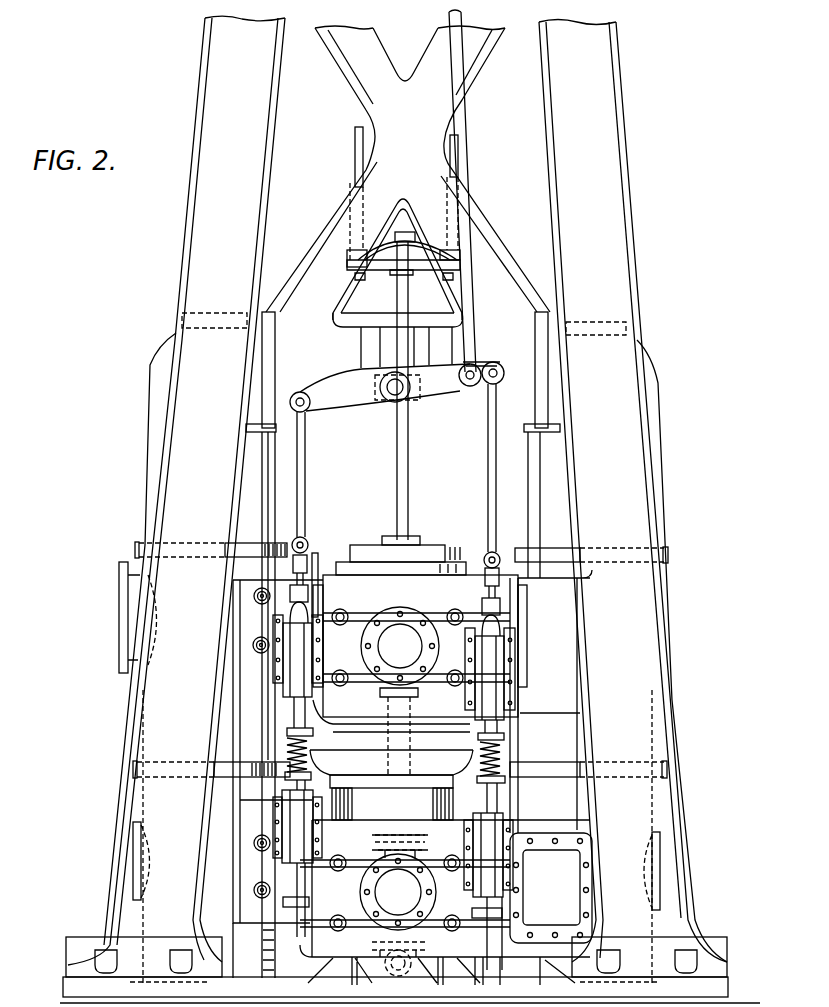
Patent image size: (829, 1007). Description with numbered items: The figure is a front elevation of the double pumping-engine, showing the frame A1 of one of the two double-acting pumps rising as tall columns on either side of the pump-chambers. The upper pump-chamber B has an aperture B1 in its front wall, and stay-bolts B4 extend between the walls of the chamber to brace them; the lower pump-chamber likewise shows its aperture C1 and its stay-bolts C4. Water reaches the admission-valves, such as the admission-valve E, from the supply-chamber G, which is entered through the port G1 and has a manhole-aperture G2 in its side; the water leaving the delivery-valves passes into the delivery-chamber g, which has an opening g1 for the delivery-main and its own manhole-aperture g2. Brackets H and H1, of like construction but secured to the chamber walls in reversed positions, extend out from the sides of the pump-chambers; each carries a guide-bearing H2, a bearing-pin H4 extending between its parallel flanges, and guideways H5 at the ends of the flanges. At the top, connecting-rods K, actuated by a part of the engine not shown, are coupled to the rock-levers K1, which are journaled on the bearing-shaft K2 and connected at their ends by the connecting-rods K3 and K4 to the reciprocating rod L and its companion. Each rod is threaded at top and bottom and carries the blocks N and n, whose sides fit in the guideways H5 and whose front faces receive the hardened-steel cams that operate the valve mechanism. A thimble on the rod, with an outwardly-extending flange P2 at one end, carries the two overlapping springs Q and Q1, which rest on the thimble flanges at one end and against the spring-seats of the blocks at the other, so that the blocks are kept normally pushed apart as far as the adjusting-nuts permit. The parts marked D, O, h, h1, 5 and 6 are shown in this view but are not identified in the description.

The pump frame A1 is at (170, 660).
The connecting-rod K is at (472, 160).
The rock-lever K1 is at (452, 396).
The bearing-shaft K2 is at (388, 405).
The connecting-rod K3 is at (497, 458).
The connecting-rod K4 is at (304, 470).
The valve spindle D is at (409, 450).
The delivery-chamber g is at (252, 752).
The delivery opening g1 is at (119, 588).
The manhole-aperture g2 is at (133, 872).
The supply-chamber G is at (412, 777).
The supply port G1 is at (530, 928).
The manhole-aperture G2 is at (660, 897).
The pump-chamber B is at (429, 655).
The pump-chamber aperture B1 is at (400, 646).
The stay-bolt B4 is at (347, 614).
The bolt O is at (306, 612).
The bracket H is at (516, 668).
The bracket H1 is at (530, 825).
The guide-bearing H2 is at (297, 863).
The bearing-pin H4 is at (292, 582).
The guideway H5 is at (512, 660).
The bolt head h is at (262, 637).
The lower bolt head h1 is at (262, 836).
The reciprocating rod L is at (502, 598).
The block N is at (506, 632).
The spring Q is at (332, 748).
The spring Q1 is at (300, 786).
The outwardly-extending flange P2 is at (512, 768).
The pump-chamber aperture C1 is at (422, 906).
The stay-bolt C4 is at (388, 843).
The admission-valve E is at (488, 891).
The block n is at (484, 812).
The bolt 5 is at (280, 846).
The bolt 6 is at (392, 729).